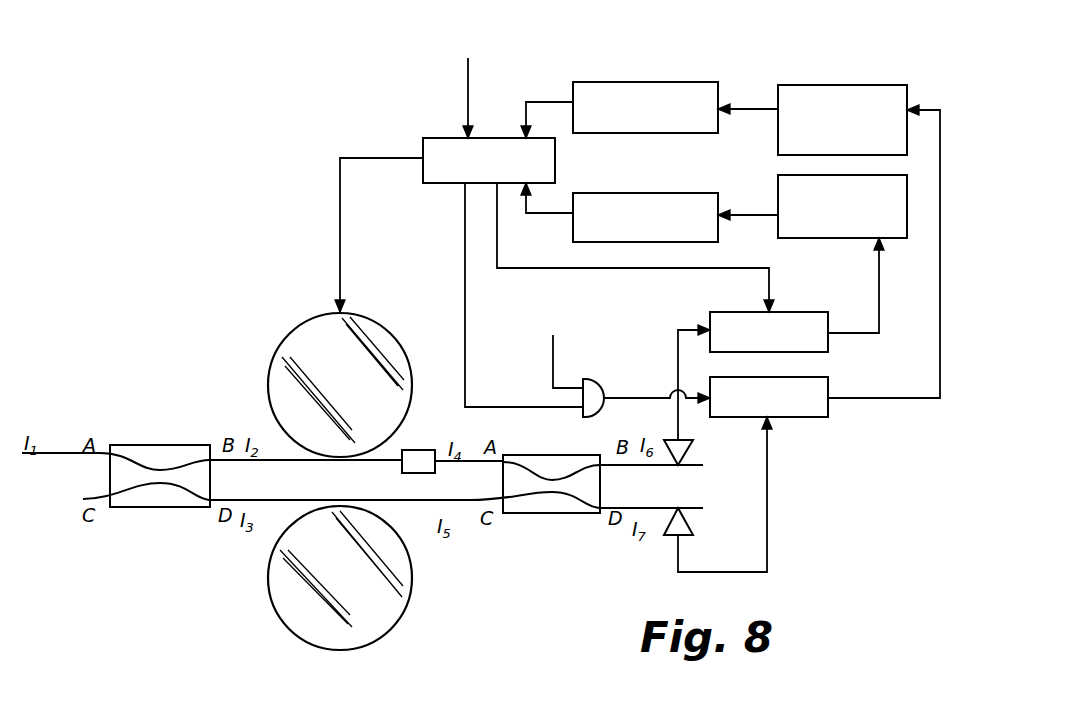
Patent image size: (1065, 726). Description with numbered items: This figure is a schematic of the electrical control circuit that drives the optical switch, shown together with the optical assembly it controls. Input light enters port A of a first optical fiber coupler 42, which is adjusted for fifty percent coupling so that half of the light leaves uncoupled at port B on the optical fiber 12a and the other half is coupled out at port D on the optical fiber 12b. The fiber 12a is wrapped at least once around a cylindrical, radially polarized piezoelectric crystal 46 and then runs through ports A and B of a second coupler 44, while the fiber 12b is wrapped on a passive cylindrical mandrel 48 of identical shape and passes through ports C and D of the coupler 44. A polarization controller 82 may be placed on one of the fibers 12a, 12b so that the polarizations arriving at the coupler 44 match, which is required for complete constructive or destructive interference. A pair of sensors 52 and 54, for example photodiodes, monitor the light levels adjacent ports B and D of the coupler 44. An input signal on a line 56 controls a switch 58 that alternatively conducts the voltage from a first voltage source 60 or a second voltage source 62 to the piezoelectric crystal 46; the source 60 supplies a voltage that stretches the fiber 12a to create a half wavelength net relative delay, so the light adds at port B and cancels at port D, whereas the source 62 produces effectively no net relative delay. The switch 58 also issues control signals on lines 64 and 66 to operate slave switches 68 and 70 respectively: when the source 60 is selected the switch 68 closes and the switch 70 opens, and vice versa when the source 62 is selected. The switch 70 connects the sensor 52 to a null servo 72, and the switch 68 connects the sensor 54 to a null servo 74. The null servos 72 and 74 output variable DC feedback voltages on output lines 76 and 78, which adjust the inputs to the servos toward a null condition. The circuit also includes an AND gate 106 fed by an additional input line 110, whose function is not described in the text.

The optical fiber 12a is at (312, 461).
The optical fiber 12b is at (288, 498).
The optical fiber coupler 42 is at (160, 445).
The optical fiber coupler 44 is at (548, 513).
The piezoelectric crystal 46 is at (295, 334).
The passive cylindrical mandrel 48 is at (396, 620).
The sensor 52 is at (693, 447).
The sensor 54 is at (693, 527).
The line 56 is at (468, 96).
The switch 58 is at (436, 183).
The first voltage source 60 is at (690, 82).
The second voltage source 62 is at (690, 178).
The line 64 is at (465, 302).
The line 66 is at (545, 268).
The slave switch 68 is at (800, 417).
The slave switch 70 is at (828, 345).
The null servo 72 is at (820, 238).
The null servo 74 is at (865, 85).
The output line 76 is at (742, 215).
The output line 78 is at (742, 109).
The polarization controller 82 is at (418, 450).
The AND gate 106 is at (600, 382).
The AND gate input line 110 is at (553, 346).